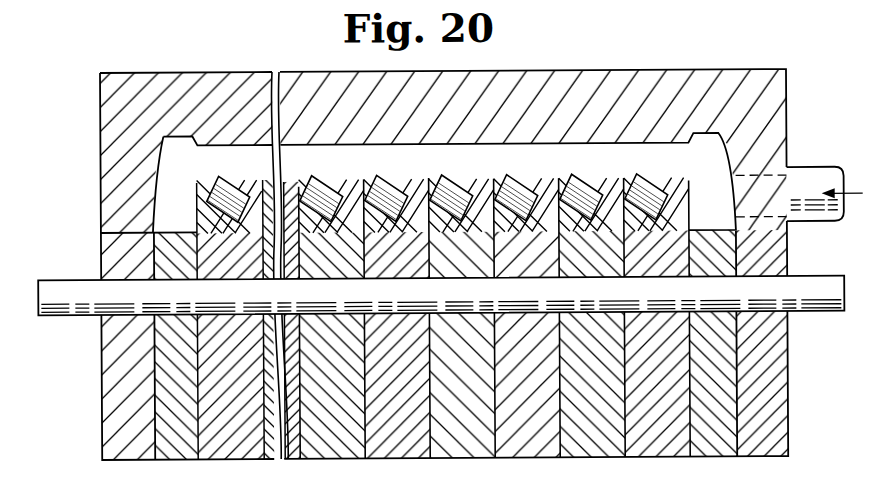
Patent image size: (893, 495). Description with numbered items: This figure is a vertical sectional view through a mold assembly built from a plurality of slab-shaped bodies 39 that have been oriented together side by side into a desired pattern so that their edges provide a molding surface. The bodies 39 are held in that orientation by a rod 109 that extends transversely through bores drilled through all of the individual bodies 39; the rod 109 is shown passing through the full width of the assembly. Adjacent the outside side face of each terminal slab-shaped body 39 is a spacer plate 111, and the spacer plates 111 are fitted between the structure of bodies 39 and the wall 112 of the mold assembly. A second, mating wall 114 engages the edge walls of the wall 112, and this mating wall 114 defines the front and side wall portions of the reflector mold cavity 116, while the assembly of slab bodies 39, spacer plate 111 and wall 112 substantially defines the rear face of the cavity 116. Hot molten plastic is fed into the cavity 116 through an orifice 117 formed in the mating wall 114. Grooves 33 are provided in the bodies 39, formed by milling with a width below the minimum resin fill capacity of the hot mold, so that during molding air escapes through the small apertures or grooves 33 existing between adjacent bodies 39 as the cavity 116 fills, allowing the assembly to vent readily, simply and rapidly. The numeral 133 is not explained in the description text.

The housing body 133 is at (100, 72).
The reflector mold cavity 116 is at (167, 166).
The mating wall 114 is at (777, 111).
The wall 112 is at (108, 390).
The spacer plate 111 is at (180, 452).
The slab-shaped bodies 39 is at (342, 453).
The grooves 33 is at (560, 201).
The rod 109 is at (58, 282).
The orifice 117 is at (813, 171).